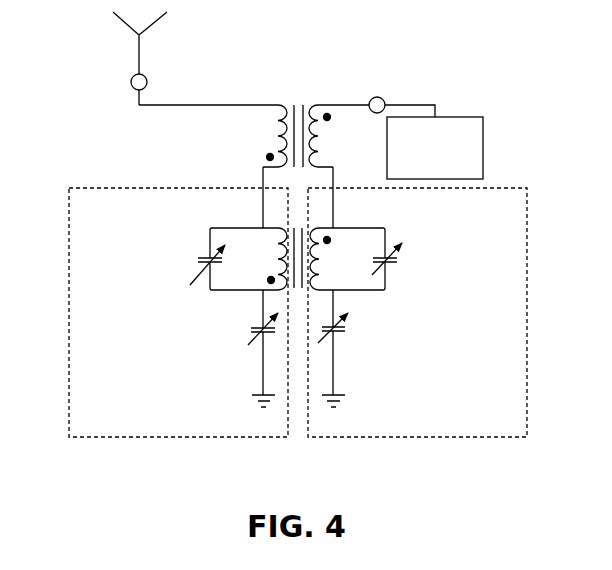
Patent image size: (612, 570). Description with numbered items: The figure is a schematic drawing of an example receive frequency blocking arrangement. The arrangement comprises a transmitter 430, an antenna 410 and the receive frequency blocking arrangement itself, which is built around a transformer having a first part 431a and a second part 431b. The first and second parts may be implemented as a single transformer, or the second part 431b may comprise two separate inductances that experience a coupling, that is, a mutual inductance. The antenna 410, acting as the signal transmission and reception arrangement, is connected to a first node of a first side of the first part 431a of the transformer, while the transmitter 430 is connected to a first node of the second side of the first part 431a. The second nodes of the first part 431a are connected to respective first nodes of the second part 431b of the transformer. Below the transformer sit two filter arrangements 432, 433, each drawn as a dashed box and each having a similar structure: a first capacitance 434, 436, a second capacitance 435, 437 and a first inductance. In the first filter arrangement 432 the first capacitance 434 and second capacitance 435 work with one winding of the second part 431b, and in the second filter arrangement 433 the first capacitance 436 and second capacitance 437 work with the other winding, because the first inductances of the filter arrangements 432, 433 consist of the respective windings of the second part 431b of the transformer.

The antenna 410 is at (122, 20).
The transmitter 430 is at (420, 170).
The first part of the transformer 431a is at (277, 137).
The second part of the transformer 431b is at (282, 258).
The filter arrangement 432 is at (178, 312).
The filter arrangement 433 is at (417, 312).
The first capacitance 434 is at (193, 283).
The second capacitance 435 is at (258, 340).
The first capacitance 436 is at (393, 262).
The second capacitance 437 is at (338, 332).